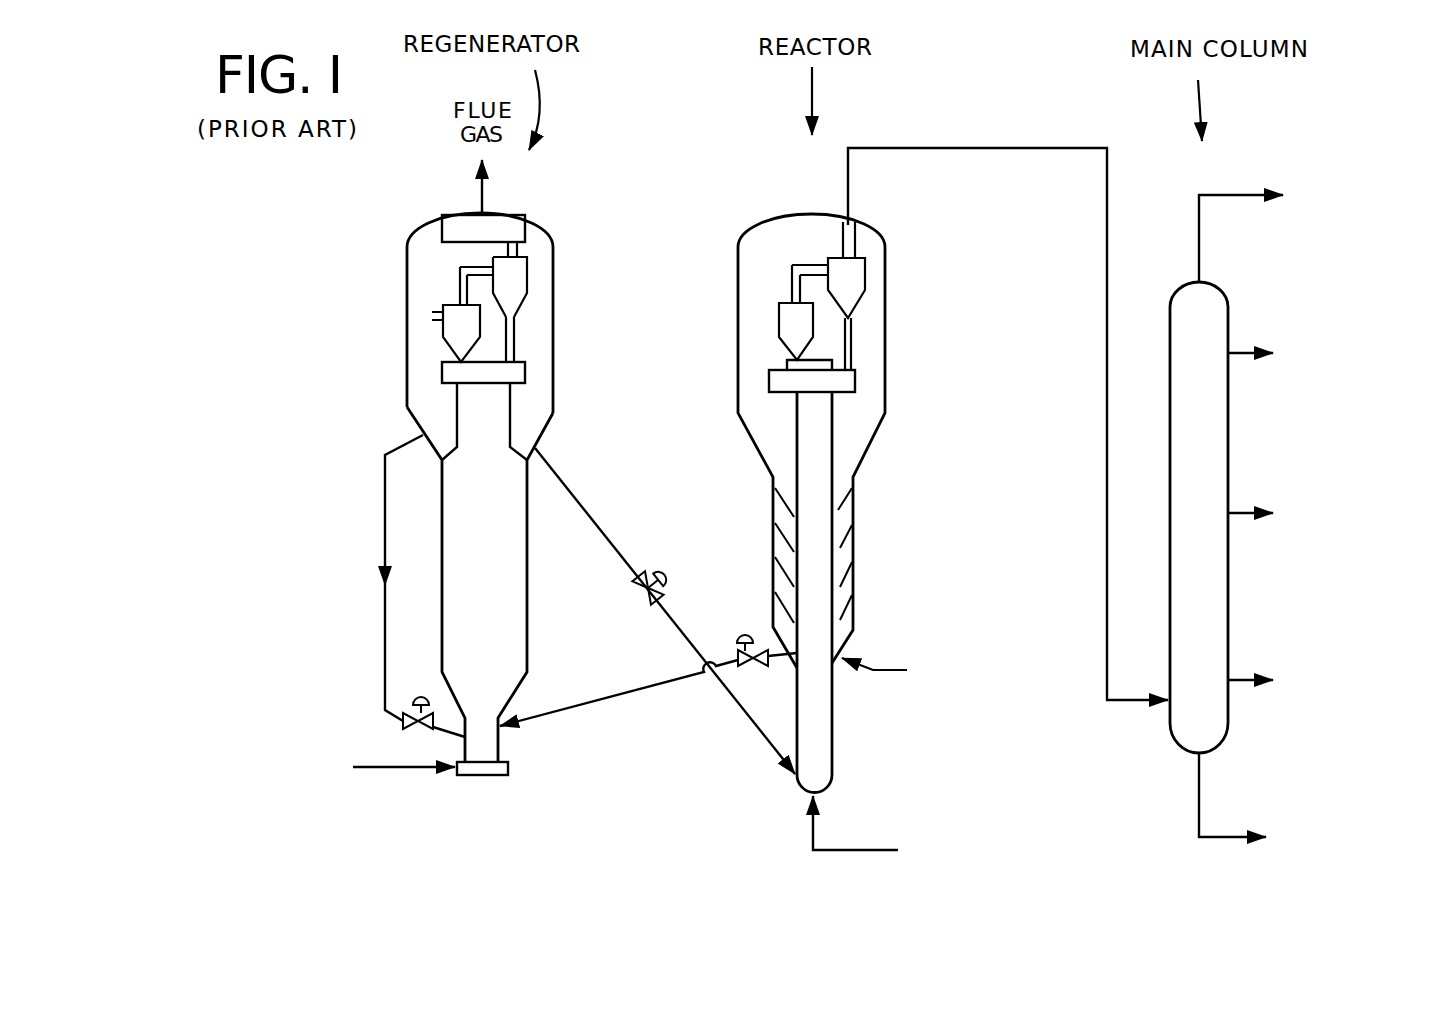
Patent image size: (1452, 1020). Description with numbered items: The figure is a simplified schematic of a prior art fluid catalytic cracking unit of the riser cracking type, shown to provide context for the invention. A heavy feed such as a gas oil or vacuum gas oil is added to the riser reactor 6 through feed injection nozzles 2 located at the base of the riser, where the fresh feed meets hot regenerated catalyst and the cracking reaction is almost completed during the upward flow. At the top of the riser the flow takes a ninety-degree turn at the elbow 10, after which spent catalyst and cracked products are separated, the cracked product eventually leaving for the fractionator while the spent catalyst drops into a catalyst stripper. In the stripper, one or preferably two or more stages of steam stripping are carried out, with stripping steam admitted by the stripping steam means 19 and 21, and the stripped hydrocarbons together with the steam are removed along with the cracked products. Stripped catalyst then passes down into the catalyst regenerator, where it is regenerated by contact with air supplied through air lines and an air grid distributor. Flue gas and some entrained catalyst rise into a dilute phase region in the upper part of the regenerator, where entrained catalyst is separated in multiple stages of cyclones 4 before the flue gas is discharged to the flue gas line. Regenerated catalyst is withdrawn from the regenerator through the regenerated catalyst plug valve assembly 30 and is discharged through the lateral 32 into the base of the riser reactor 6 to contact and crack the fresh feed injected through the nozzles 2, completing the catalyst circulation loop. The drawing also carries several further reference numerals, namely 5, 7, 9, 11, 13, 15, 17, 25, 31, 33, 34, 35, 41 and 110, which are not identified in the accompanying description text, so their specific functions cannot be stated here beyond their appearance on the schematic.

The feed injection nozzles 2 is at (840, 848).
The cyclones 4 is at (832, 753).
The regenerated catalyst standpipe 5 is at (750, 718).
The riser reactor 6 is at (479, 467).
The spent catalyst transfer line 7 is at (573, 710).
The reactor cyclone separators 9 is at (779, 306).
The elbow 10 is at (480, 207).
The reactor overhead vapor line 11 is at (1010, 148).
The catalyst stripper 13 is at (855, 548).
The catalyst recirculation line 15 is at (382, 513).
The regenerator lower section 17 is at (527, 605).
The stripping steam means 19 is at (458, 282).
The stripping steam means 21 is at (553, 360).
The air inlet line 25 is at (400, 768).
The regenerated catalyst plug valve assembly 30 is at (1228, 423).
The gas outlet line 31 is at (1232, 193).
The lateral 32 is at (1240, 352).
The light cycle oil outlet line 33 is at (1235, 513).
The heavy cycle oil outlet line 34 is at (1235, 680).
The main column bottoms line 35 is at (1240, 840).
The stripping steam line 41 is at (870, 668).
The air distributor 110 is at (502, 747).